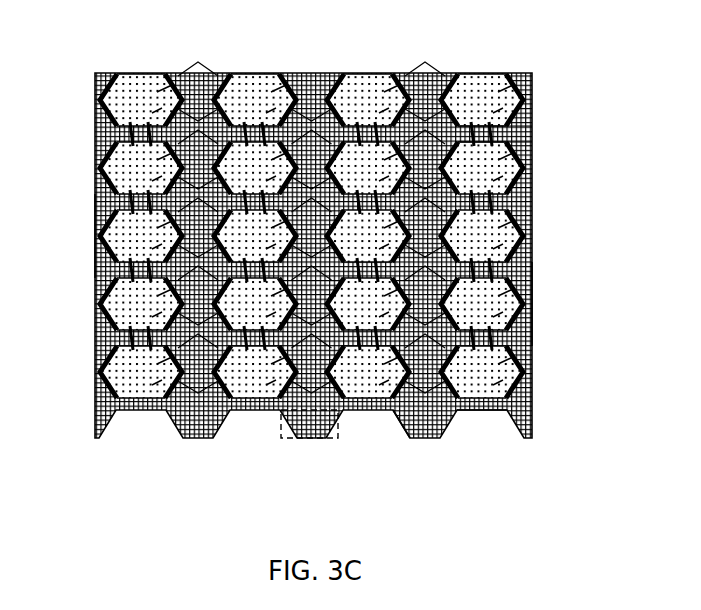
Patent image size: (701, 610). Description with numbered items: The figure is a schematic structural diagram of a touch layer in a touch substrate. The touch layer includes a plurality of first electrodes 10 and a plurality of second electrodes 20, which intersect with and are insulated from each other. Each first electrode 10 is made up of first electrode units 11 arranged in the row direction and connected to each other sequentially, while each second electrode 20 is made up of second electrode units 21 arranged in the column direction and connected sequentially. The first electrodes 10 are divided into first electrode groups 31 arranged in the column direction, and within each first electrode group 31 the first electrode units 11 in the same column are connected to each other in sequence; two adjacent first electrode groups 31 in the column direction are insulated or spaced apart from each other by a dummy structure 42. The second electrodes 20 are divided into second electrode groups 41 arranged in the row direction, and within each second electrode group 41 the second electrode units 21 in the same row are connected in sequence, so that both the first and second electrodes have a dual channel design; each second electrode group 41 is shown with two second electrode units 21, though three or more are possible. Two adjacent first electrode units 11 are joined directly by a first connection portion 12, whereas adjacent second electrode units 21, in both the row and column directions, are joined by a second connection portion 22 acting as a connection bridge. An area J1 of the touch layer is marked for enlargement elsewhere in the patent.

The first electrode 10 is at (538, 333).
The first electrode unit 11 is at (437, 420).
The first connection portion 12 is at (477, 410).
The second electrode 20 is at (258, 71).
The second electrode unit 21 is at (140, 82).
The second connection portion 22 is at (203, 58).
The first electrode group 31 is at (310, 438).
The second electrode group 41 is at (520, 127).
The dummy structure 42 is at (538, 302).
The area J1 is at (100, 227).